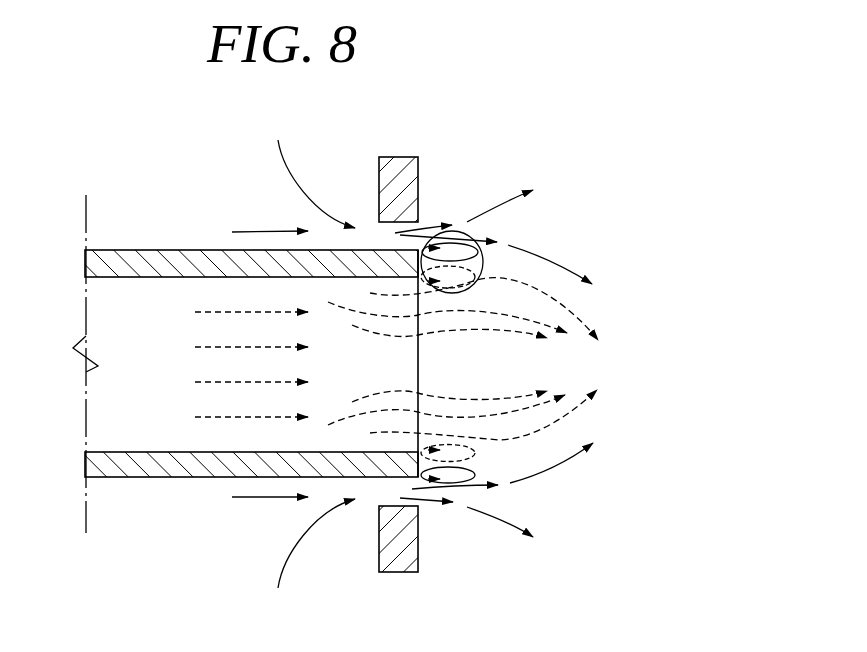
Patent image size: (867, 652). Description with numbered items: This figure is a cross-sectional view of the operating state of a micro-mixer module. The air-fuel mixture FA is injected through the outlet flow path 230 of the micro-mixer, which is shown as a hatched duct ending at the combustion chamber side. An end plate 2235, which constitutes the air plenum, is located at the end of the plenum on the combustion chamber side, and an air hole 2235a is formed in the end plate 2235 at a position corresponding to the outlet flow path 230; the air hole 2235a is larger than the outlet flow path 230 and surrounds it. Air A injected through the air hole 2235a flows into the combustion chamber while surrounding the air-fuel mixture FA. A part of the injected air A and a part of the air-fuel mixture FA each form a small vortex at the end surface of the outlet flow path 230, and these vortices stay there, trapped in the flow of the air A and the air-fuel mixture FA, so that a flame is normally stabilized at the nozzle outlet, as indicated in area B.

The outlet flow path 230 is at (150, 260).
The end plate 2235 is at (399, 178).
The air hole 2235a is at (386, 236).
The air A is at (285, 365).
The area B is at (482, 263).
The air-fuel mixture FA is at (229, 364).